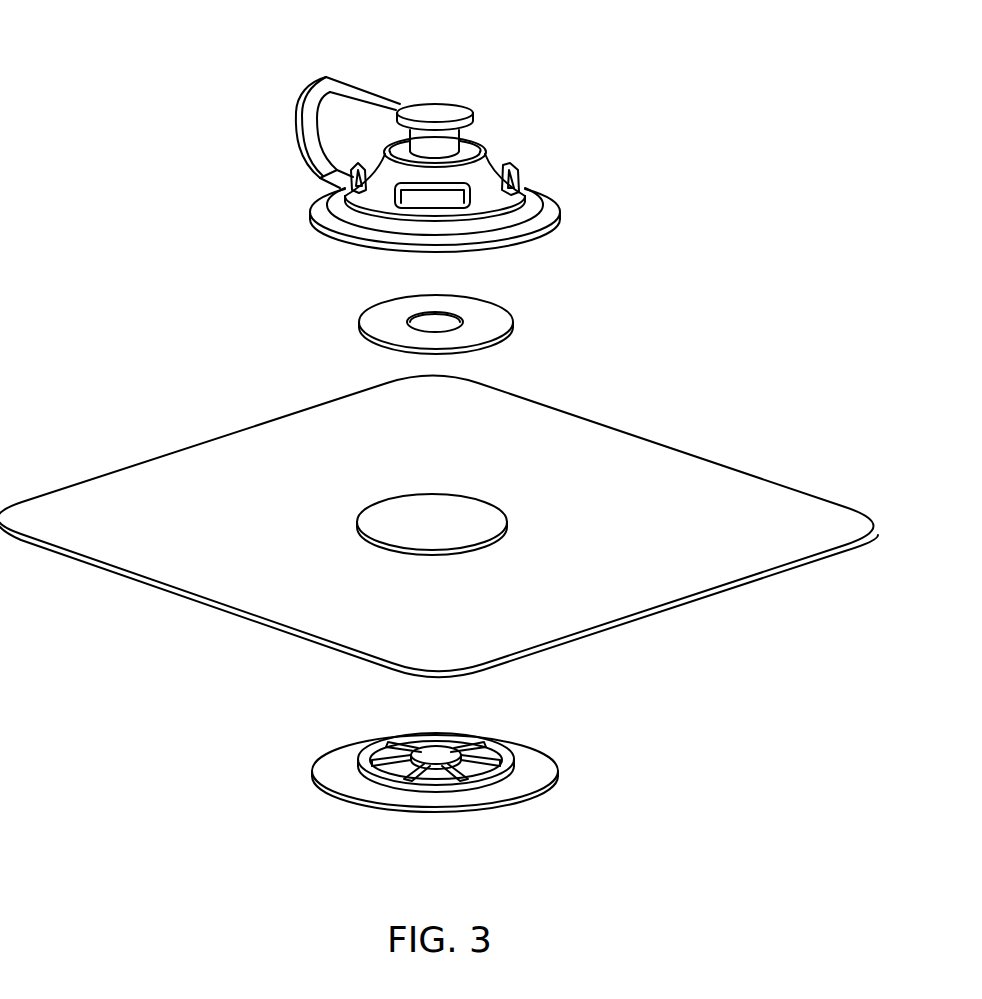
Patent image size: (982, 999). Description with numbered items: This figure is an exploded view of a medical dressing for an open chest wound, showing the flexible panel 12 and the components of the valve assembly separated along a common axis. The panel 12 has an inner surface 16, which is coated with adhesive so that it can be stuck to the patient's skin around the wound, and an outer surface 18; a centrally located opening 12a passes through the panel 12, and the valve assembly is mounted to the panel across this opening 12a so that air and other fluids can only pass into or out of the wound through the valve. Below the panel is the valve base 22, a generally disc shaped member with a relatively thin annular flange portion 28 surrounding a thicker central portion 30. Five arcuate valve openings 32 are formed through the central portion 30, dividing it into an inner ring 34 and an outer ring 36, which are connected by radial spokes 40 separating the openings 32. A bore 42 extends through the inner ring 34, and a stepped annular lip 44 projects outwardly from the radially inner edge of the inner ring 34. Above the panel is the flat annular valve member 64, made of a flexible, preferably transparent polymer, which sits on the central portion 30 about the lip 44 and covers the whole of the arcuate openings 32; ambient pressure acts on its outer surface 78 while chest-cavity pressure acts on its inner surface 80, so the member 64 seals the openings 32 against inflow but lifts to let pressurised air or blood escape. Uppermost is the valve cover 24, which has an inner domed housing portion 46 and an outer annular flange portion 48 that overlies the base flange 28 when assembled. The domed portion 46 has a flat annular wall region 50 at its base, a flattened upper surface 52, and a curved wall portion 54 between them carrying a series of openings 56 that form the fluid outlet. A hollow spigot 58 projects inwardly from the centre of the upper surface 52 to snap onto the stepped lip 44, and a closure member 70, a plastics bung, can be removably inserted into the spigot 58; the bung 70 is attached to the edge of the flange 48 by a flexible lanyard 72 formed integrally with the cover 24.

The flexible panel 12 is at (439, 525).
The opening 12a is at (493, 503).
The inner surface 16 is at (653, 608).
The outer surface 18 is at (630, 448).
The valve base 22 is at (430, 778).
The valve cover 24 is at (437, 150).
The annular flange portion 28 is at (337, 780).
The central portion 30 is at (427, 747).
The arcuate valve openings 32 is at (497, 745).
The inner ring 34 is at (480, 780).
The outer ring 36 is at (393, 787).
The radial spokes 40 is at (483, 747).
The bore 42 is at (440, 757).
The stepped annular lip 44 is at (447, 770).
The domed housing portion 46 is at (497, 153).
The annular flange portion 48 is at (479, 204).
The flat annular wall region 50 is at (367, 217).
The flattened upper surface 52 is at (473, 145).
The curved wall portion 54 is at (555, 222).
The openings 56 is at (330, 195).
The hollow spigot 58 is at (447, 200).
The valve member 64 is at (451, 330).
The closure member 70 is at (447, 110).
The lanyard 72 is at (357, 82).
The outer surface 78 is at (373, 320).
The inner surface 80 is at (380, 343).